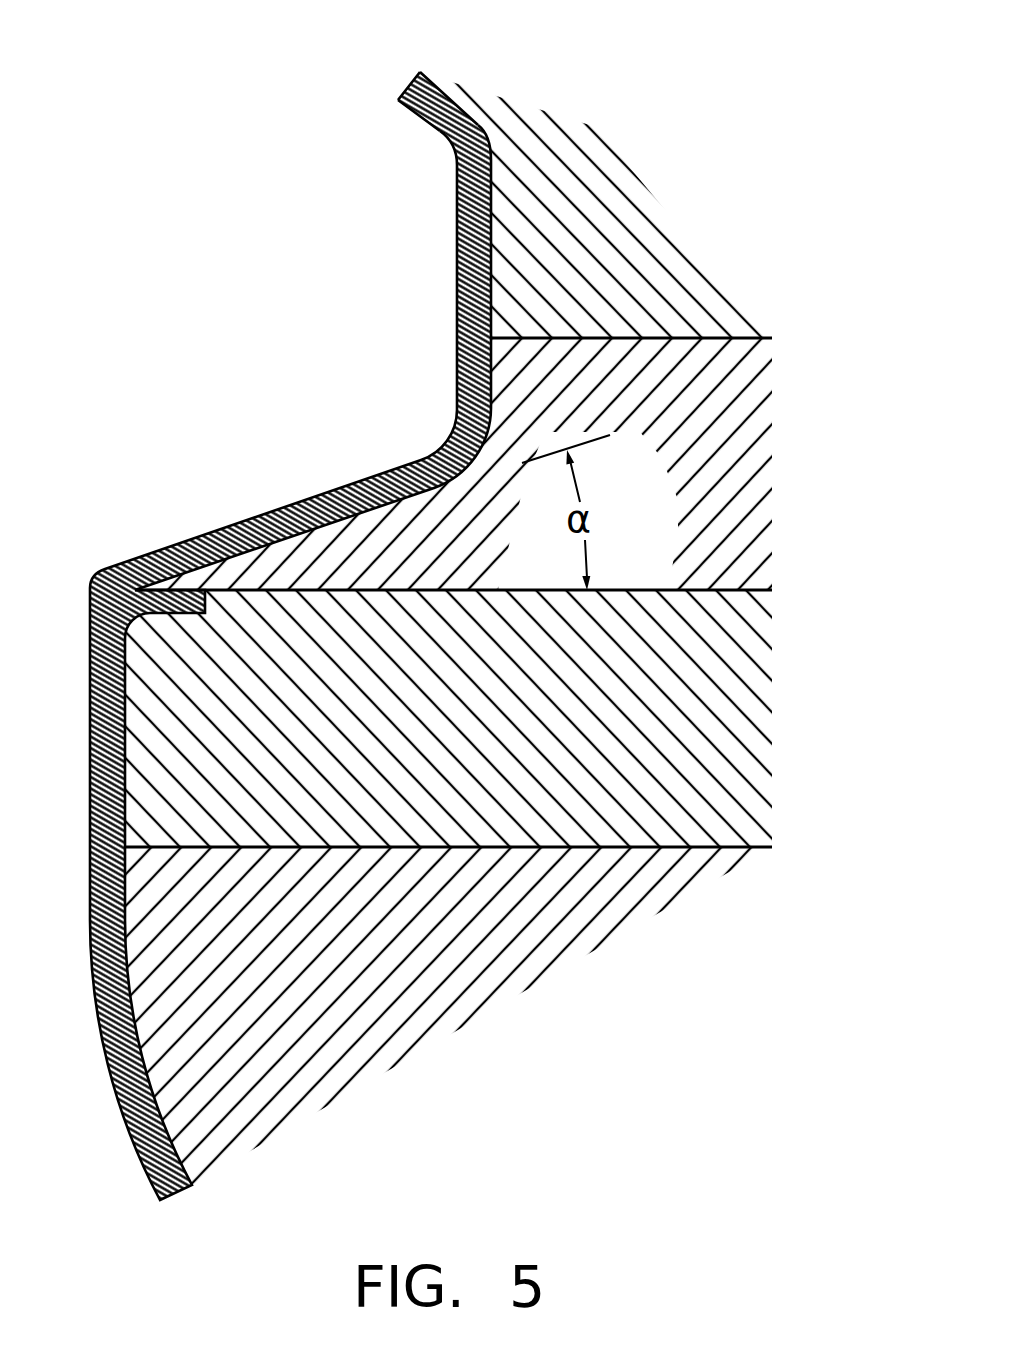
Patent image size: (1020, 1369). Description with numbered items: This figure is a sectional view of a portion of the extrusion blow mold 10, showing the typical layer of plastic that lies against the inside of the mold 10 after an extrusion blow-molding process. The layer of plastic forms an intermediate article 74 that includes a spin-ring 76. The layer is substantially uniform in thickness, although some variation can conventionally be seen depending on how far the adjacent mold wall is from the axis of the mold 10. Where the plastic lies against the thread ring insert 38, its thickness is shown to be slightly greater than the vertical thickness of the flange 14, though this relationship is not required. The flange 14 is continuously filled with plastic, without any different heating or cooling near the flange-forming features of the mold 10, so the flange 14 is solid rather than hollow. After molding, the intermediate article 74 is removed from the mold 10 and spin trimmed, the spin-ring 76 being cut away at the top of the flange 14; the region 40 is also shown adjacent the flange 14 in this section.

The extrusion blow mold 10 is at (656, 167).
The flange 14 is at (183, 593).
The thread ring insert 38 is at (708, 850).
The flange portion 40 is at (727, 468).
The intermediate article 74 is at (446, 70).
The spin-ring 76 is at (457, 288).